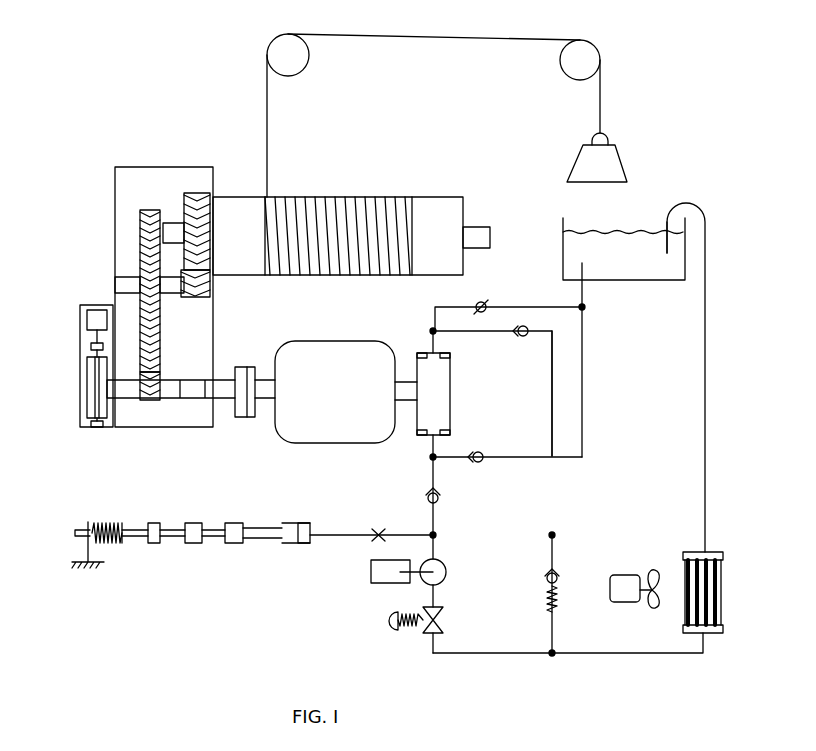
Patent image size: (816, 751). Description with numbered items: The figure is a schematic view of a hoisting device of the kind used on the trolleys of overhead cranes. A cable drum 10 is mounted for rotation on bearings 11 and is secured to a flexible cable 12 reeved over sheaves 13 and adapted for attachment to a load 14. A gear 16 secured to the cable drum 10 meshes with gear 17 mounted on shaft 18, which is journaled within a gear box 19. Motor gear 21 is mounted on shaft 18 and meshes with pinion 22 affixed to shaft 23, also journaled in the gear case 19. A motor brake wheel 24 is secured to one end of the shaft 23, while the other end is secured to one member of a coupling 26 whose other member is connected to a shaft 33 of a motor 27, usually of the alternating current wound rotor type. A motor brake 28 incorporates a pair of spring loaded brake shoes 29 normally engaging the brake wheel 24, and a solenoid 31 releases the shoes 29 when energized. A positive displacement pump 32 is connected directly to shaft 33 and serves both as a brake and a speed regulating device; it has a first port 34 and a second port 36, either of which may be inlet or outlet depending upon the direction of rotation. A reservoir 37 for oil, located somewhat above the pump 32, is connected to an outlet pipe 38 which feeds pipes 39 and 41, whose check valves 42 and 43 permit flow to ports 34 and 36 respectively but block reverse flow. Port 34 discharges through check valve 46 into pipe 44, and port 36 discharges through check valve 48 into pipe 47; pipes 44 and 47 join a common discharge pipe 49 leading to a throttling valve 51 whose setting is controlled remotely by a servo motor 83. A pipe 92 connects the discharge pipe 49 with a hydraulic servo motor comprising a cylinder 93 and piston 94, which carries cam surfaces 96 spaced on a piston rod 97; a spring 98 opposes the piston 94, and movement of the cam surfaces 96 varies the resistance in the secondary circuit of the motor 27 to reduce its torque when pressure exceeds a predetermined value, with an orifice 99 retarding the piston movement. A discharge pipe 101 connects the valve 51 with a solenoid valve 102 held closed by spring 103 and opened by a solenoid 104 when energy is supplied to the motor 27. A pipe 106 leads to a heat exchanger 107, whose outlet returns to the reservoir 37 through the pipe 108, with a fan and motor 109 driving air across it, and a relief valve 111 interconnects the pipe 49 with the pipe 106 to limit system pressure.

The cable drum 10 is at (460, 212).
The bearings 11 is at (173, 223).
The flexible cable 12 is at (266, 103).
The sheaves 13 is at (296, 44).
The load 14 is at (613, 167).
The gear 16 is at (197, 193).
The gear 17 is at (212, 292).
The shaft 18 is at (176, 293).
The gear box 19 is at (115, 250).
The motor gear 21 is at (148, 210).
The pinion 22 is at (158, 402).
The shaft 23 is at (180, 388).
The motor brake wheel 24 is at (89, 398).
The coupling 26 is at (240, 367).
The motor 27 is at (305, 344).
The motor brake 28 is at (78, 362).
The brake shoes 29 is at (92, 345).
The solenoid 31 is at (98, 310).
The positive displacement pump 32 is at (447, 378).
The shaft 33 is at (402, 398).
The first port 34 is at (432, 350).
The second port 36 is at (430, 440).
The reservoir 37 is at (565, 251).
The outlet pipe 38 is at (584, 294).
The pipe 39 is at (507, 307).
The pipe 41 is at (530, 458).
The check valve 42 is at (476, 304).
The check valve 43 is at (476, 463).
The pipe 44 is at (552, 396).
The check valve 46 is at (530, 336).
The pipe 47 is at (431, 520).
The check valve 48 is at (440, 500).
The common discharge pipe 49 is at (436, 548).
The throttling valve 51 is at (446, 572).
The servo motor 83 is at (380, 583).
The pipe 92 is at (325, 533).
The cylinder 93 is at (304, 545).
The piston 94 is at (290, 523).
The cam surfaces 96 is at (232, 523).
The piston rod 97 is at (272, 540).
The spring 98 is at (106, 545).
The orifice 99 is at (378, 530).
The discharge pipe 101 is at (436, 598).
The solenoid valve 102 is at (440, 624).
The spring 103 is at (414, 628).
The solenoid 104 is at (392, 630).
The pipe 106 is at (490, 654).
The heat exchanger 107 is at (720, 600).
The pipe 108 is at (706, 326).
The fan and motor 109 is at (622, 600).
The relief valve 111 is at (548, 585).